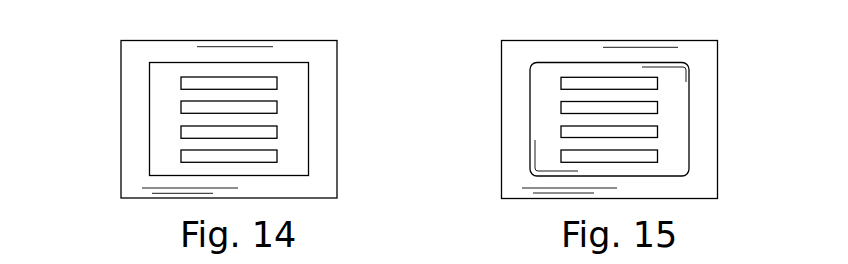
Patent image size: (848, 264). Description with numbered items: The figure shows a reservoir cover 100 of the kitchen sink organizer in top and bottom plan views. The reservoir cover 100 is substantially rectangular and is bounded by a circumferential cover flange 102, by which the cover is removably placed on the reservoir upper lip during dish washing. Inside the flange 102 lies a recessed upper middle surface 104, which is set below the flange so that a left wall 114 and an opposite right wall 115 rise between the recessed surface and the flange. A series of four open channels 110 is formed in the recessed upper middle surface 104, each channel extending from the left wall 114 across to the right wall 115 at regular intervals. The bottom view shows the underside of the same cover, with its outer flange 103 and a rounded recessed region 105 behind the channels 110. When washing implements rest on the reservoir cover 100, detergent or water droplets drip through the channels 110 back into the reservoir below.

In FIG. 14, the reservoir cover 100 is at (219, 118).
In FIG. 15, the reservoir cover 100 is at (597, 104).
In FIG. 14, the cover flange 102 is at (323, 112).
In FIG. 15, the substrate 103 is at (705, 62).
In FIG. 14, the recessed upper middle surface 104 is at (290, 168).
In FIG. 15, the rounded die attach region 105 is at (676, 97).
In FIG. 14, the open channels 110 is at (175, 83).
In FIG. 15, the open channels 110 is at (663, 107).
In FIG. 14, the left wall 114 is at (157, 76).
In FIG. 14, the right wall 115 is at (301, 85).